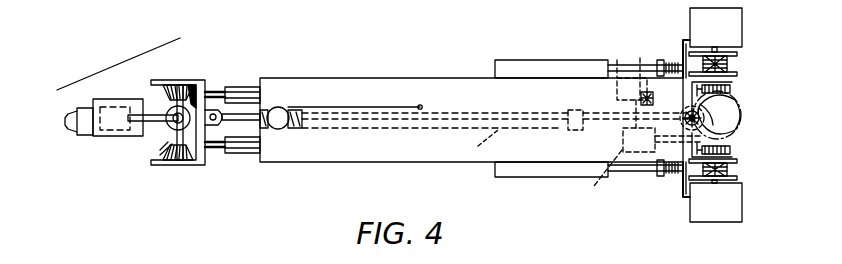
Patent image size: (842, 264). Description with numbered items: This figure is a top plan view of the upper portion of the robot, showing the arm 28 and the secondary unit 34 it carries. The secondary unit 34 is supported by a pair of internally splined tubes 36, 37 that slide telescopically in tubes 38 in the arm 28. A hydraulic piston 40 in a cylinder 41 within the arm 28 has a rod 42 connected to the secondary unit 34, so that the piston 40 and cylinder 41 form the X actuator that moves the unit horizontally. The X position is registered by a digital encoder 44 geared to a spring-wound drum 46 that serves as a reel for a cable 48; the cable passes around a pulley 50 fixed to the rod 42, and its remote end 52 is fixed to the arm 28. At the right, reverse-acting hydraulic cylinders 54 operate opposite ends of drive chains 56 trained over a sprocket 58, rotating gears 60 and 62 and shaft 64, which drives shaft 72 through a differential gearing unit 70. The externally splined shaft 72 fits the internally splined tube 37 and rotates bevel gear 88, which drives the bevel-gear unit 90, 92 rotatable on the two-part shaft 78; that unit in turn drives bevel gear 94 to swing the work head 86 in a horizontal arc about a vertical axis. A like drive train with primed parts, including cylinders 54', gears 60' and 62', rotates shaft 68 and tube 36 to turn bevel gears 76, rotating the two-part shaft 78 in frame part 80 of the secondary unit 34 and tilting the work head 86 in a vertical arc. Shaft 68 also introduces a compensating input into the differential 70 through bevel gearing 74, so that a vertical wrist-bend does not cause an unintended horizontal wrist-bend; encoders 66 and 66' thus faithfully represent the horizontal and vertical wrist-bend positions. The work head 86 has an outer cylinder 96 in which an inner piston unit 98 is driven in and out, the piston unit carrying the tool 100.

The arm 28 is at (344, 80).
The secondary unit 34 is at (106, 64).
The internally splined tube 36 is at (214, 92).
The internally splined tube 37 is at (212, 152).
The tubes 38 is at (240, 88).
The hydraulic piston 40 is at (568, 110).
The cylinder 41 is at (474, 145).
The rod 42 is at (386, 129).
The digital encoder 44 is at (730, 131).
The spring-wound drum 46 is at (745, 117).
The cable 48 is at (326, 130).
The pulley 50 is at (280, 108).
The remote end of cable 52 is at (420, 105).
The reverse-acting hydraulic cylinders 54 is at (551, 185).
The reverse-acting hydraulic cylinders 54' is at (551, 55).
The drive chains 56 is at (668, 60).
The sprocket 58 is at (738, 58).
The gear 60 is at (740, 135).
The gear 60' is at (743, 114).
The gear 62 is at (745, 156).
The gear 62' is at (742, 94).
The shaft 64 is at (660, 172).
The encoder 66 is at (739, 207).
The encoder 66' is at (741, 27).
The shaft 68 is at (618, 62).
The differential gearing unit 70 is at (625, 128).
The shaft 72 is at (608, 181).
The bevel gearing 74 is at (638, 71).
The bevel gears 76 is at (186, 82).
The two-part shaft 78 is at (168, 106).
The frame part 80 is at (201, 166).
The work head 86 is at (106, 137).
The bevel gear 88 is at (181, 152).
The bevel-gear unit 90 is at (168, 160).
The bevel-gear unit 92 is at (168, 128).
The bevel gear 94 is at (184, 96).
The outer cylinder 96 is at (100, 137).
The inner piston unit 98 is at (82, 136).
The tool 100 is at (65, 122).